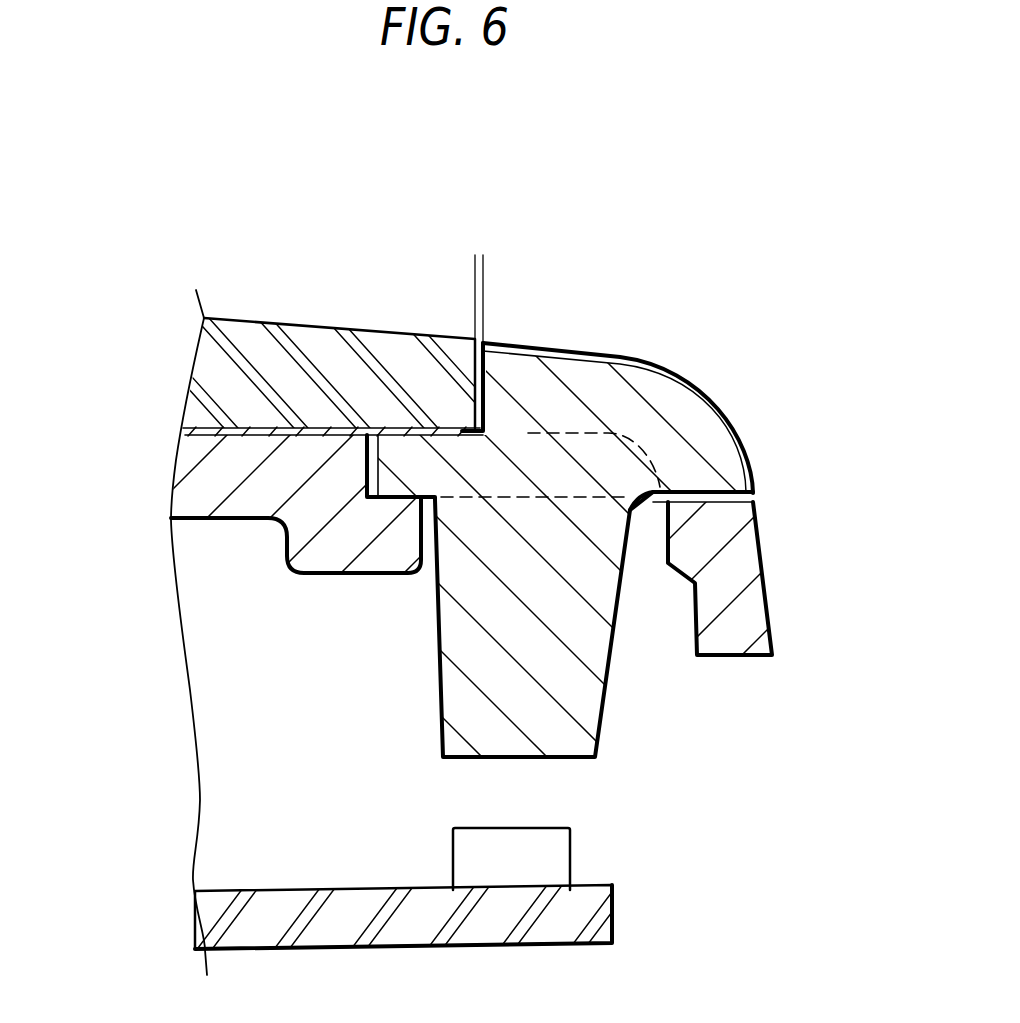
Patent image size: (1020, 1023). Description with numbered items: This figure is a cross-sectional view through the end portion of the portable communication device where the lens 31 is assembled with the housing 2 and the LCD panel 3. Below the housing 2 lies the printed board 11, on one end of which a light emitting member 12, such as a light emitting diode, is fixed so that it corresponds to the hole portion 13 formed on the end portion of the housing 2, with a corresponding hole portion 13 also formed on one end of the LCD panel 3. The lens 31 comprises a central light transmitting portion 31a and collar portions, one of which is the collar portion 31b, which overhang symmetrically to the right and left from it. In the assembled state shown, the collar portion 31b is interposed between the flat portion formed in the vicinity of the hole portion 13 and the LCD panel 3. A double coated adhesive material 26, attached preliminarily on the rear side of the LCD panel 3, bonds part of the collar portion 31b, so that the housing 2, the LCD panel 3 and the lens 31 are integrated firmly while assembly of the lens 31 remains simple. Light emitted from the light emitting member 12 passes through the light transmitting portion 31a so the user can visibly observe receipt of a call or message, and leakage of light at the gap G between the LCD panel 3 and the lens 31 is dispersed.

The housing 2 is at (468, 556).
The LCD panel 3 is at (316, 331).
The printed board 11 is at (471, 917).
The light emitting member 12 is at (580, 851).
The hole portion 13 is at (648, 584).
The double coated adhesive material 26 is at (262, 434).
The lens 31 is at (537, 541).
The light transmitting portion 31a is at (622, 512).
The collar portion 31b is at (550, 360).
The gap G is at (476, 281).